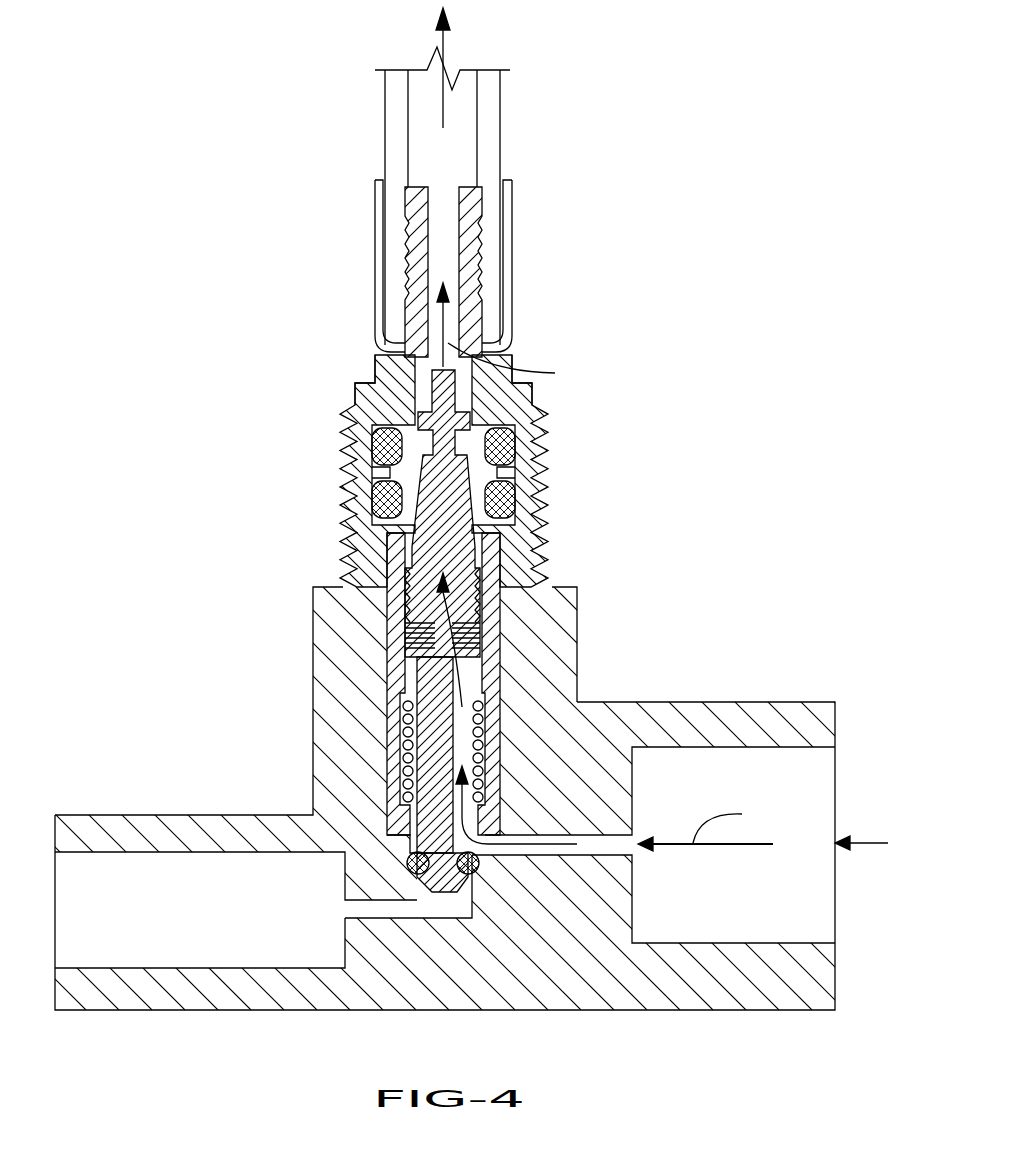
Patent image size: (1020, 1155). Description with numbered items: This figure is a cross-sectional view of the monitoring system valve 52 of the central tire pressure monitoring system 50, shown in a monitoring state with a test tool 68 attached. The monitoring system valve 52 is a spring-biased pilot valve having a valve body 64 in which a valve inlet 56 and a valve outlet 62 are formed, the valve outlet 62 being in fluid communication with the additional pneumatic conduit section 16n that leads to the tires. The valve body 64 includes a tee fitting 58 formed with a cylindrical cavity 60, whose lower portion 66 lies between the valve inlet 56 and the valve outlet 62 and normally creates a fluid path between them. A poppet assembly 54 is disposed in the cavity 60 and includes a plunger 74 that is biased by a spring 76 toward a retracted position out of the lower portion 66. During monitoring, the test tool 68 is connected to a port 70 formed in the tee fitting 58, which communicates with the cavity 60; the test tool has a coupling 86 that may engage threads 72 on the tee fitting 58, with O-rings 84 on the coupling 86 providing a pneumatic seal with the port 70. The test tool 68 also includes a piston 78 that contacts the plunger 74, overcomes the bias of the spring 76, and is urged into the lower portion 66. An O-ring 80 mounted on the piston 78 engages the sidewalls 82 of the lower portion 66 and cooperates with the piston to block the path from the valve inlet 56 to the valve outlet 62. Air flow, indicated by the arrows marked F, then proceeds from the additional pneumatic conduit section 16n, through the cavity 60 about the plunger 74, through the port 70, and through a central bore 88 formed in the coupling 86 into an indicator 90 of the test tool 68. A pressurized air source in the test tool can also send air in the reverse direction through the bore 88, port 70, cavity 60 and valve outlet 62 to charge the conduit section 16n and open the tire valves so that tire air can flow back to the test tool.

The central tire pressure monitoring system 50 is at (171, 226).
The monitoring system valve 52 is at (797, 698).
The poppet assembly 54 is at (490, 665).
The valve inlet 56 is at (185, 852).
The tee fitting 58 is at (567, 610).
The cylindrical cavity 60 is at (395, 595).
The valve outlet 62 is at (805, 748).
The valve body 64 is at (88, 1010).
The lower portion of cavity 66 is at (443, 905).
The test tool 68 is at (525, 347).
The port 70 is at (375, 450).
The threads 72 is at (545, 477).
The plunger 74 is at (425, 683).
The spring 76 is at (395, 745).
The piston 78 is at (430, 510).
The O-ring 80 is at (478, 870).
The sidewalls 82 is at (410, 866).
The O-rings 84 is at (512, 436).
The coupling 86 is at (383, 383).
The central bore 88 is at (450, 192).
The indicator 90 is at (445, 47).
The additional pneumatic conduit section 16n is at (865, 848).